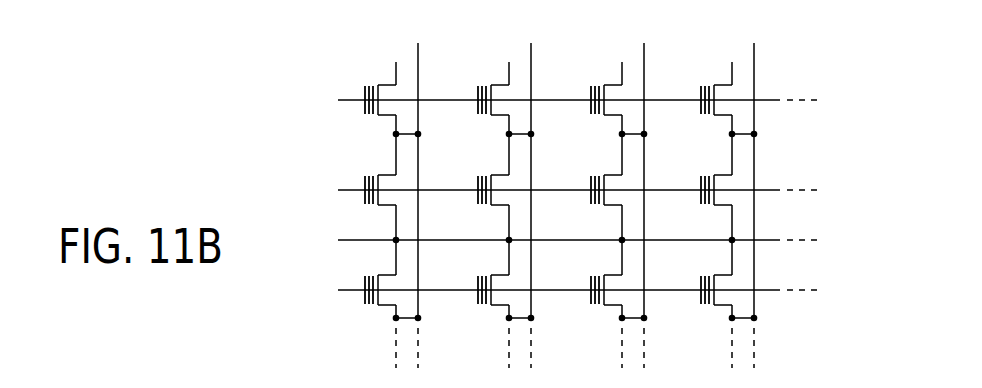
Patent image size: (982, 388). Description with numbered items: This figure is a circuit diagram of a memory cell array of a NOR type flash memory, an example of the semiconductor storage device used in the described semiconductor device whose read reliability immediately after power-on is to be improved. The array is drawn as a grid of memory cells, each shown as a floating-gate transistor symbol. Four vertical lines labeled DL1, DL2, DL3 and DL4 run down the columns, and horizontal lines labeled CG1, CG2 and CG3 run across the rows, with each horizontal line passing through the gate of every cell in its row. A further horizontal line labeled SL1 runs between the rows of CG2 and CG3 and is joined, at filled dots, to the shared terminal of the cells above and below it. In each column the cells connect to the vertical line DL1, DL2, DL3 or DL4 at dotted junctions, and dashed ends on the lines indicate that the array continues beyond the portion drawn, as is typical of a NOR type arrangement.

The data line 1 DL1 is at (418, 188).
The data line 2 DL2 is at (531, 188).
The data line 3 DL3 is at (644, 188).
The data line 4 DL4 is at (754, 188).
The control gate line 1 CG1 is at (555, 98).
The control gate line 2 CG2 is at (555, 188).
The control gate line 3 CG3 is at (555, 290).
The source line 1 SL1 is at (555, 237).